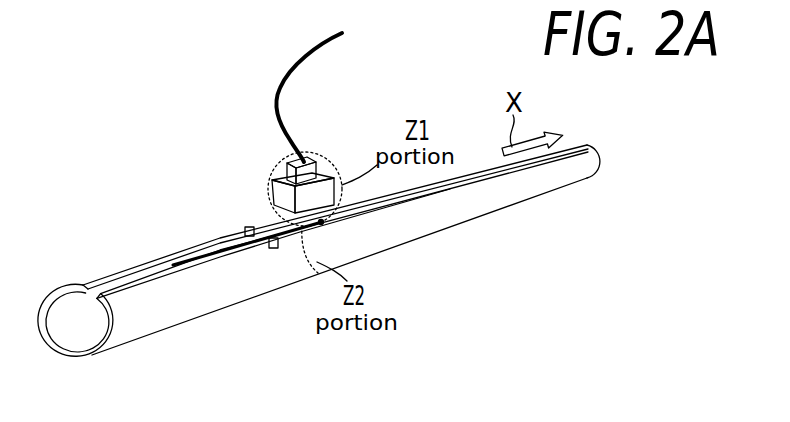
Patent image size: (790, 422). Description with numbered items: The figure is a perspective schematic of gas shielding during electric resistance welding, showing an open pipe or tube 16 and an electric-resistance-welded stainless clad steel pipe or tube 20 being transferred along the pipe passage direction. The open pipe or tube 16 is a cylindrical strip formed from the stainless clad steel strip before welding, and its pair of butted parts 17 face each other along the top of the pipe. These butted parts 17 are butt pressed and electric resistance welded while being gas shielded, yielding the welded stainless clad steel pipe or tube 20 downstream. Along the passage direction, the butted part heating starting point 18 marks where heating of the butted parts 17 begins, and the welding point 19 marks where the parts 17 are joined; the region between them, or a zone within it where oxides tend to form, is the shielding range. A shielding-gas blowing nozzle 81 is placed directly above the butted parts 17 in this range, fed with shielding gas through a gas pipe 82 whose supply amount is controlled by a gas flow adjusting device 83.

The open pipe or tube 16 is at (186, 322).
The butted parts 17 is at (194, 257).
The butted part heating starting point 18 is at (273, 238).
The welding point 19 is at (321, 222).
The electric-resistance-welded stainless clad steel pipe or tube 20 is at (477, 208).
The shielding-gas blowing nozzle 81 is at (331, 172).
The gas pipe 82 is at (278, 104).
The gas flow adjusting device 83 is at (286, 172).